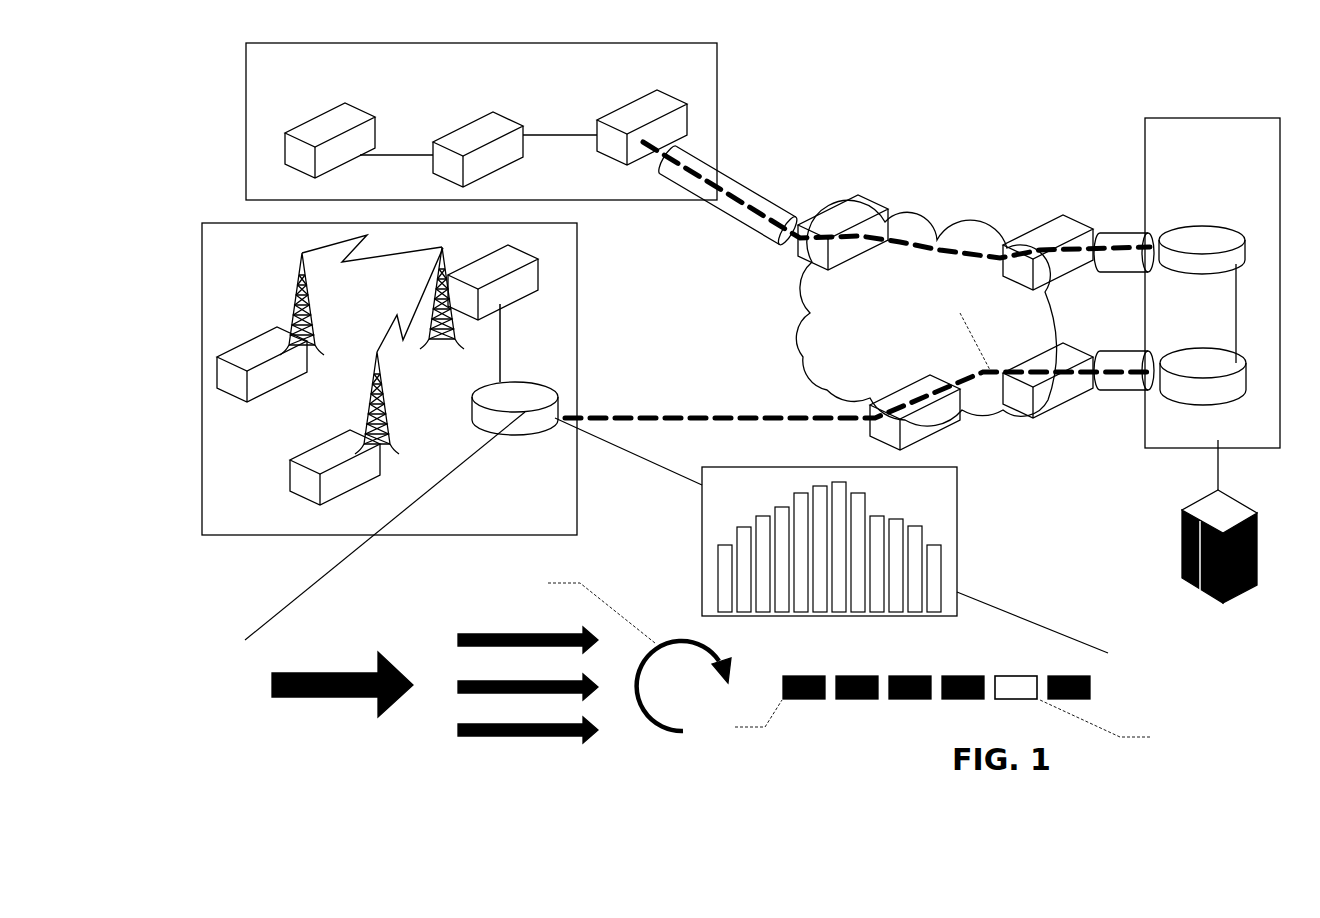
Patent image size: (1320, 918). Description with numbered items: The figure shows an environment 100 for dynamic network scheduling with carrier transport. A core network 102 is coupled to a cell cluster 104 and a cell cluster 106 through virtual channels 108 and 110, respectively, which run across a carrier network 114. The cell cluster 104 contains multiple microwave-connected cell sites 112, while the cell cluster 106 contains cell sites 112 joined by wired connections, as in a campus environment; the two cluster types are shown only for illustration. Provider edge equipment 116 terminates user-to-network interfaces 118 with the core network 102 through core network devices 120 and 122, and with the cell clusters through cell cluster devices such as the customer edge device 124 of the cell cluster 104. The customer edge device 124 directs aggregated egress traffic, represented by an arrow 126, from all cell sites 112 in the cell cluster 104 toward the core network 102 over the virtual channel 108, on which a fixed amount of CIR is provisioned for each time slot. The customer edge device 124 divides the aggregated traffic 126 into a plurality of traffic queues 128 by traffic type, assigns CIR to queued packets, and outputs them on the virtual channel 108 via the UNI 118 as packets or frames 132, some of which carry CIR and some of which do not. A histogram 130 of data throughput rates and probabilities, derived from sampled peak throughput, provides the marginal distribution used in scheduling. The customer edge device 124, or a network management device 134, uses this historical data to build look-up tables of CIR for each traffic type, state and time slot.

The environment 100 is at (210, 82).
The core network 102 is at (1212, 283).
The cell cluster 104 is at (389, 379).
The cell cluster 106 is at (481, 121).
The virtual channel 108 is at (960, 313).
The virtual channel 110 is at (905, 245).
The cell site 112 is at (645, 120).
The carrier network 114 is at (926, 313).
The provider edge equipment 116 is at (793, 260).
The user-to-network interface 118 is at (753, 235).
The core network device 120 is at (1198, 266).
The core network device 122 is at (1203, 388).
The customer edge device 124 is at (535, 398).
The aggregated egress traffic 126 is at (333, 695).
The traffic queues 128 is at (483, 735).
The histogram 130 is at (957, 517).
The packets or frames 132 is at (916, 713).
The network management device 134 is at (1200, 585).